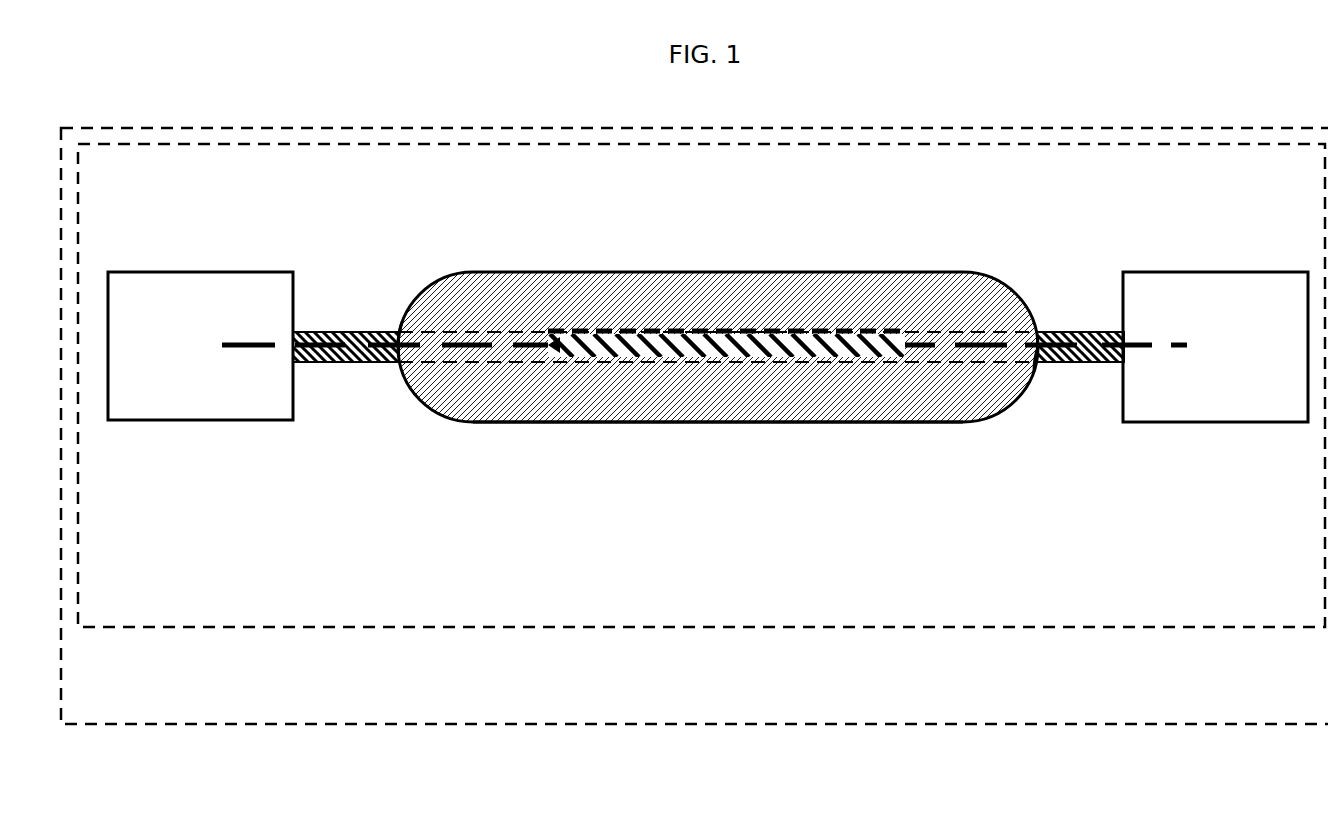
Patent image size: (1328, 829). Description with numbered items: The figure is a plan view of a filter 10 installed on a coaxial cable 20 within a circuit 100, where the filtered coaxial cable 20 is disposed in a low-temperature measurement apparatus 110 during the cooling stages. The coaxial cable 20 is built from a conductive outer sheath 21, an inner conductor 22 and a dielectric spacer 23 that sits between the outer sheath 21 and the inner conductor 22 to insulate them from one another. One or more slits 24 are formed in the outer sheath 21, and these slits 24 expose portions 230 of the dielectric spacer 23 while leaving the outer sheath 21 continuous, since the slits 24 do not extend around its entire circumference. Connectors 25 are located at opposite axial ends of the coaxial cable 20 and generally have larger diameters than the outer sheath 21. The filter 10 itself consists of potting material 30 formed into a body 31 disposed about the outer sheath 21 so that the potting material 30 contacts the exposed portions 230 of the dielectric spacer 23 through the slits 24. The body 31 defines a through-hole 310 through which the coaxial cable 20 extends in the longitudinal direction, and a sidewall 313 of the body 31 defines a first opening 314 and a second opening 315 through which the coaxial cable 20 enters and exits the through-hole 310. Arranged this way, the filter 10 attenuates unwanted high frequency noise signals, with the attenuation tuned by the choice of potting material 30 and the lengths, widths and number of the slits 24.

The circuit 100 is at (751, 724).
The low-temperature measurement apparatus 110 is at (633, 627).
The filter 10 is at (669, 402).
The coaxial cable 20 is at (707, 358).
The conductive outer sheath 21 is at (313, 343).
The inner conductor 22 is at (330, 343).
The dielectric spacer 23 is at (348, 343).
The slits 24 is at (724, 271).
The exposed portions of dielectric spacer 230 is at (738, 345).
The connectors 25 is at (183, 420).
The potting material 30 is at (669, 402).
The body 31 is at (930, 422).
The through-hole 310 is at (985, 335).
The sidewall 313 is at (772, 422).
The first opening 314 is at (393, 365).
The second opening 315 is at (1037, 365).